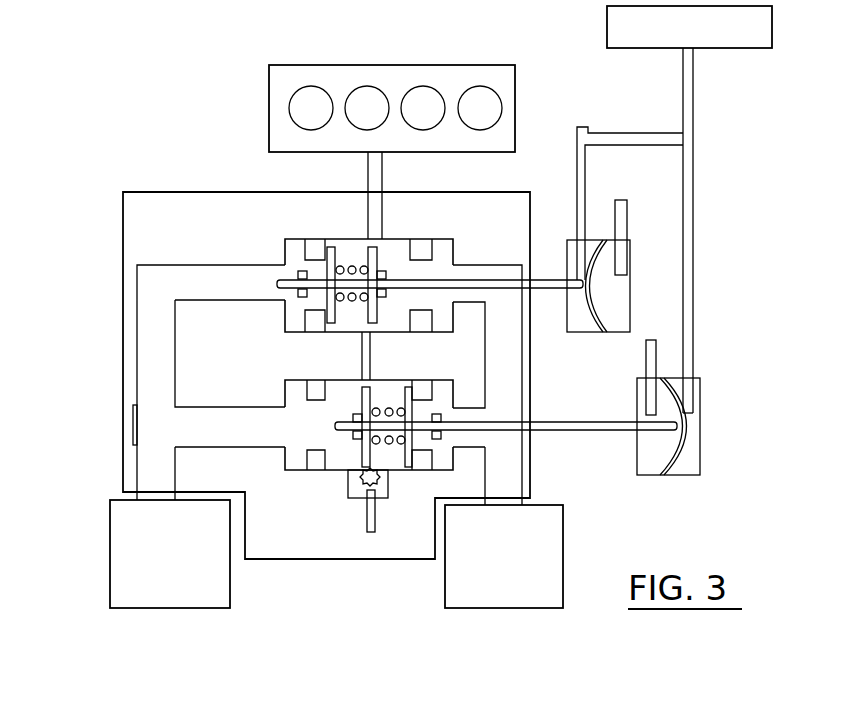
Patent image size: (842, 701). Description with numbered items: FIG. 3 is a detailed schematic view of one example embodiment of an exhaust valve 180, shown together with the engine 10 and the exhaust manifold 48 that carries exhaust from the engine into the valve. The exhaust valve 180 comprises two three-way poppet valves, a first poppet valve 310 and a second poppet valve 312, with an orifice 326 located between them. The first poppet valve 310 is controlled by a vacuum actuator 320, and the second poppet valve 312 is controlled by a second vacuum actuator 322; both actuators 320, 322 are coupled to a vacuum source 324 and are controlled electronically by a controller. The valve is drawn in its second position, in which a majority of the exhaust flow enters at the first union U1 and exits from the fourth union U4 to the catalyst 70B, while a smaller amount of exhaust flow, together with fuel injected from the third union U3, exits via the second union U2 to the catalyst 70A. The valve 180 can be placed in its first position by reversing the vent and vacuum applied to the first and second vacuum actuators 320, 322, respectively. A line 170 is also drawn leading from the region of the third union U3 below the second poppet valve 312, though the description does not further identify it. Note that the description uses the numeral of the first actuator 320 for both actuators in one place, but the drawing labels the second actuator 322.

The engine 10 is at (516, 80).
The exhaust manifold 48 is at (383, 176).
The exhaust valve 180 is at (125, 192).
The first poppet valve 310 is at (435, 239).
The second poppet valve 312 is at (413, 380).
The orifice 326 is at (371, 347).
The vacuum actuator 320 is at (632, 272).
The second vacuum actuator 322 is at (700, 436).
The vacuum source 324 is at (727, 49).
The solenoid line 170 is at (378, 497).
The catalyst 70A is at (110, 552).
The catalyst 70B is at (445, 600).
The union 1 U1 is at (388, 239).
The union 2 U2 is at (163, 402).
The union 3 U3 is at (400, 470).
The union 4 U4 is at (512, 438).